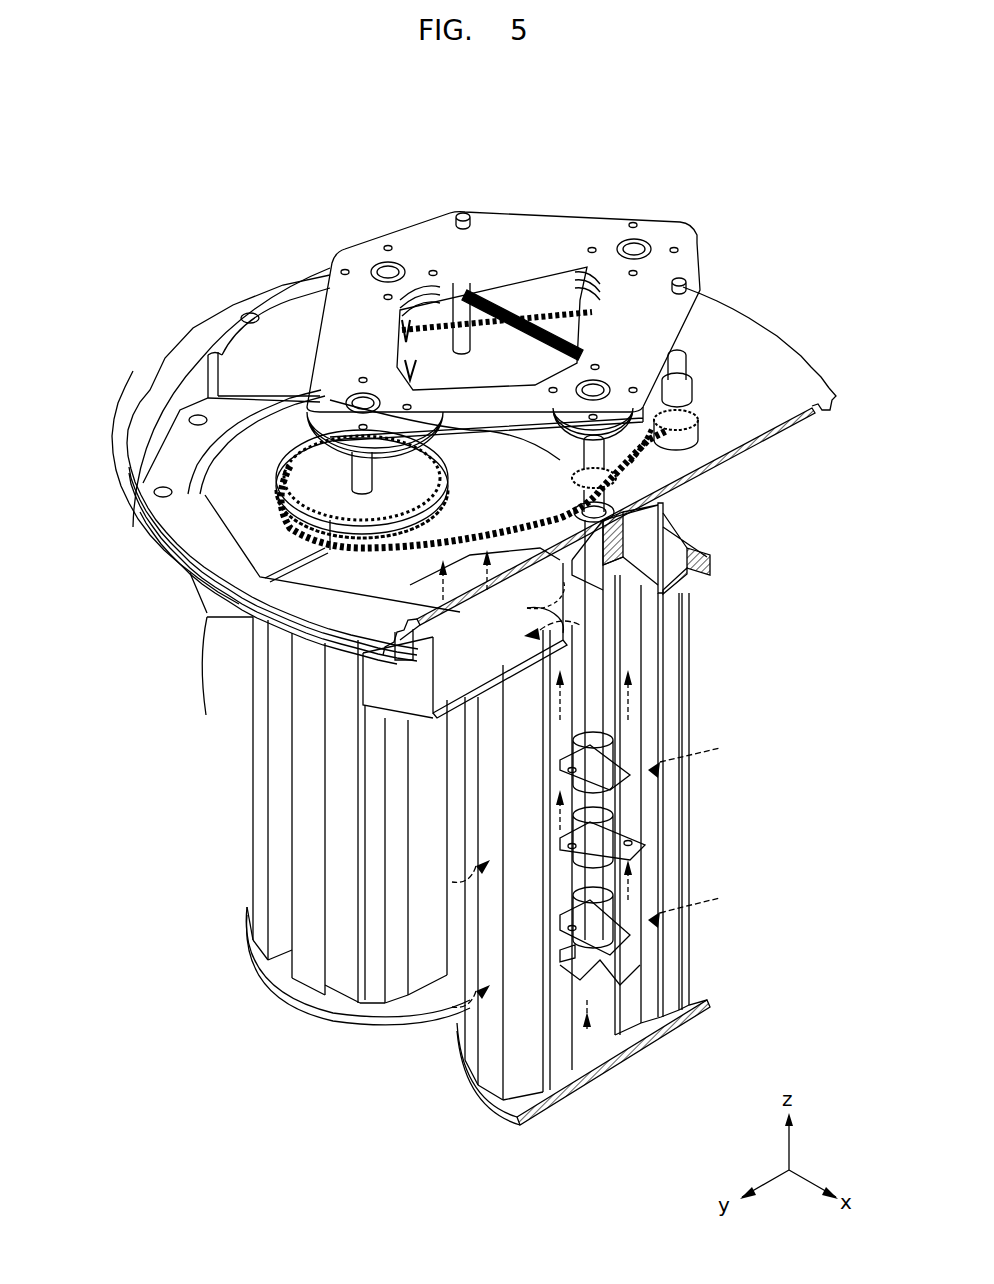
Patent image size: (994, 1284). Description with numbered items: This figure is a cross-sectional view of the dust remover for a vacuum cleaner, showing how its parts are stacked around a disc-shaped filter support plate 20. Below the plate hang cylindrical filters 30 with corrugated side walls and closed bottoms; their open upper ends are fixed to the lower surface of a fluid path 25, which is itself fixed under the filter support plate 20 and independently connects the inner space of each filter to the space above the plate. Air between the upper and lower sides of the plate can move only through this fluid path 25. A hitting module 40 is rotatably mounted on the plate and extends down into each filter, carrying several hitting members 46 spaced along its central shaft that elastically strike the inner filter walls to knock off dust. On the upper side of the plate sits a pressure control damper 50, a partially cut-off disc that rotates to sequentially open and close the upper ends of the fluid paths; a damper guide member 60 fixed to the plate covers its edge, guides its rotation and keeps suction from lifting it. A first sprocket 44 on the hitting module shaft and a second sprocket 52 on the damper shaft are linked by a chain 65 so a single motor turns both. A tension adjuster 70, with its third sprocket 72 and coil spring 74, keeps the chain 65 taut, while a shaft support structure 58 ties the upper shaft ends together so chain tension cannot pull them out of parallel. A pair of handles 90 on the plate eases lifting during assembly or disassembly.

The filter support plate 20 is at (800, 386).
The fluid path 25 is at (388, 680).
The filters 30 is at (488, 1035).
The hitting module 40 is at (585, 1018).
The first sprocket 44 is at (405, 310).
The hitting member 46 is at (620, 822).
The pressure control damper 50 is at (240, 488).
The second sprocket 52 is at (312, 487).
The shaft support structure 58 is at (597, 228).
The damper guide member 60 is at (175, 472).
The chain 65 is at (438, 285).
The tension adjuster 70 is at (692, 372).
The third sprocket 72 is at (700, 410).
The coil spring 74 is at (510, 300).
The handles 90 is at (232, 338).